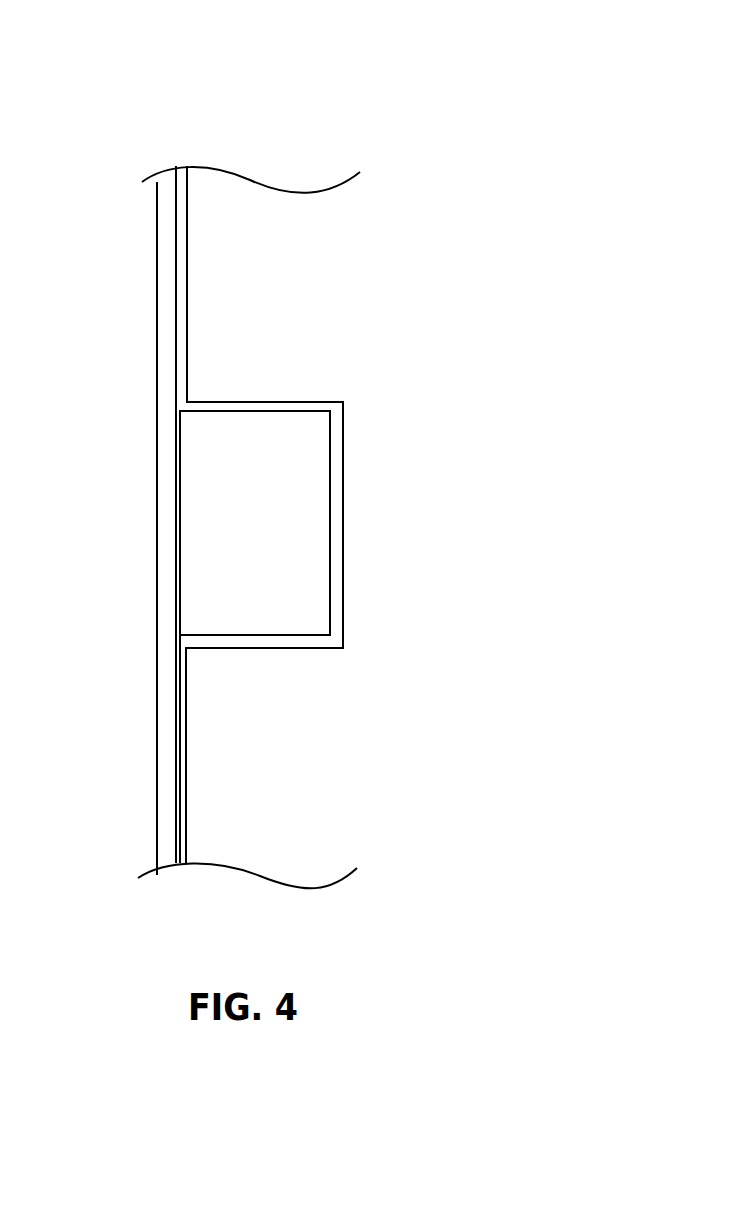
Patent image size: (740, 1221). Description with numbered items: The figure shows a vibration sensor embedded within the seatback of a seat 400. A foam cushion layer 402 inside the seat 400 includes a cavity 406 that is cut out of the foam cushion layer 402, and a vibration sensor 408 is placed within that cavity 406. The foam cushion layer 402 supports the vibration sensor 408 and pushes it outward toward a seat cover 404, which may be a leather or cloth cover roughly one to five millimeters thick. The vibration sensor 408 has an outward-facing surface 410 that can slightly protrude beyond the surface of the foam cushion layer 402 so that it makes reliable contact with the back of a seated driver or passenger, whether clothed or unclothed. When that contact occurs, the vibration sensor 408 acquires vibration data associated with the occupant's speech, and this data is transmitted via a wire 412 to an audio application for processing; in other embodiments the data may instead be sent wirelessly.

The seat 400 is at (322, 53).
The foam cushion layer 402 is at (250, 196).
The seat cover 404 is at (157, 333).
The cavity 406 is at (320, 400).
The vibration sensor 408 is at (317, 490).
The outward-facing surface 410 is at (180, 523).
The wire 412 is at (182, 672).